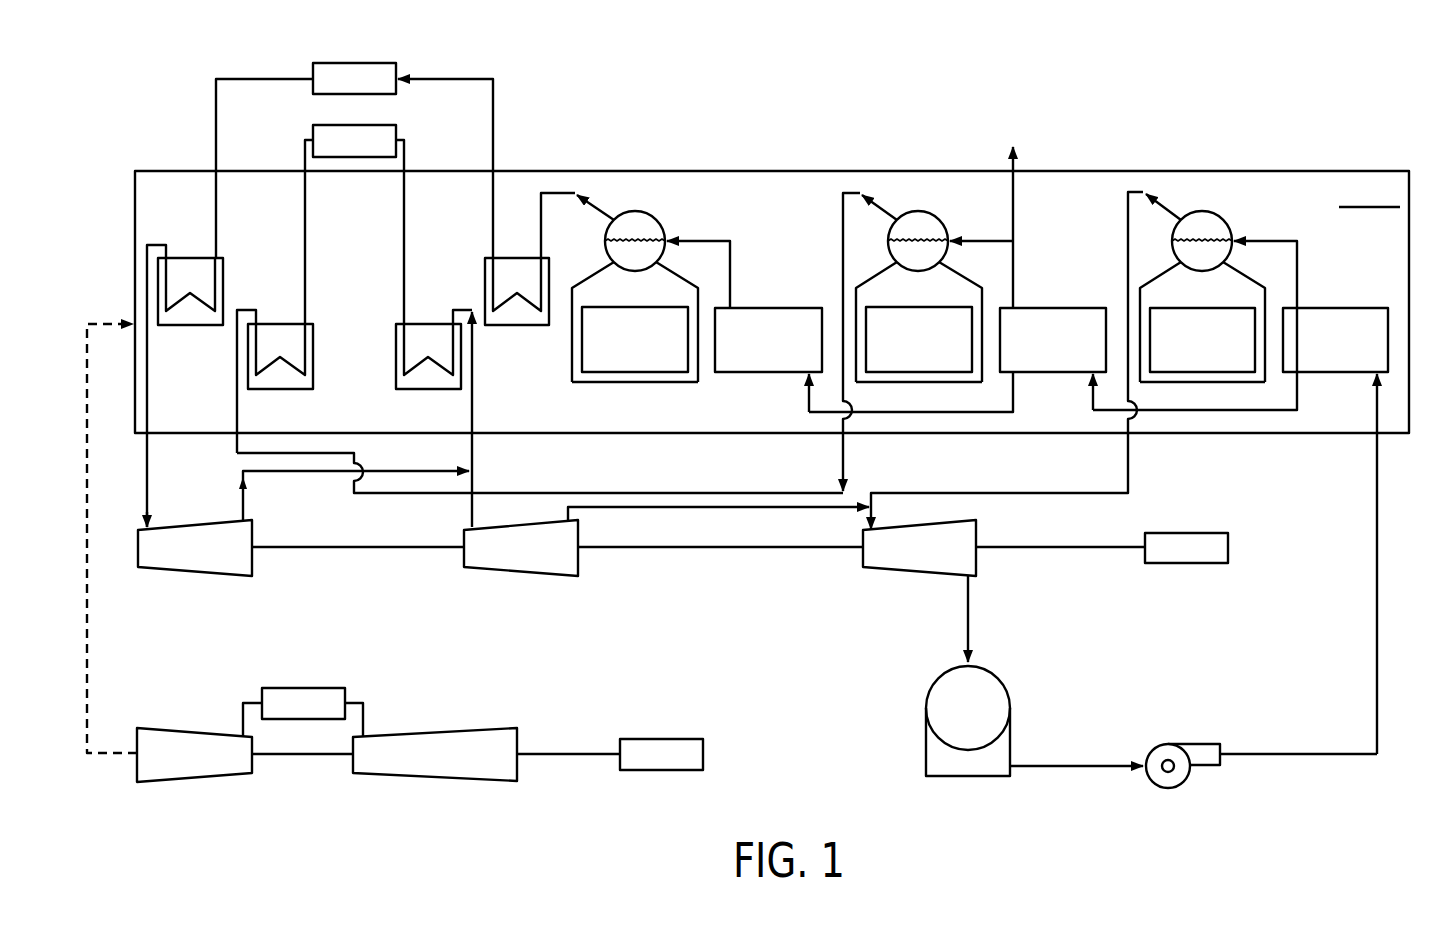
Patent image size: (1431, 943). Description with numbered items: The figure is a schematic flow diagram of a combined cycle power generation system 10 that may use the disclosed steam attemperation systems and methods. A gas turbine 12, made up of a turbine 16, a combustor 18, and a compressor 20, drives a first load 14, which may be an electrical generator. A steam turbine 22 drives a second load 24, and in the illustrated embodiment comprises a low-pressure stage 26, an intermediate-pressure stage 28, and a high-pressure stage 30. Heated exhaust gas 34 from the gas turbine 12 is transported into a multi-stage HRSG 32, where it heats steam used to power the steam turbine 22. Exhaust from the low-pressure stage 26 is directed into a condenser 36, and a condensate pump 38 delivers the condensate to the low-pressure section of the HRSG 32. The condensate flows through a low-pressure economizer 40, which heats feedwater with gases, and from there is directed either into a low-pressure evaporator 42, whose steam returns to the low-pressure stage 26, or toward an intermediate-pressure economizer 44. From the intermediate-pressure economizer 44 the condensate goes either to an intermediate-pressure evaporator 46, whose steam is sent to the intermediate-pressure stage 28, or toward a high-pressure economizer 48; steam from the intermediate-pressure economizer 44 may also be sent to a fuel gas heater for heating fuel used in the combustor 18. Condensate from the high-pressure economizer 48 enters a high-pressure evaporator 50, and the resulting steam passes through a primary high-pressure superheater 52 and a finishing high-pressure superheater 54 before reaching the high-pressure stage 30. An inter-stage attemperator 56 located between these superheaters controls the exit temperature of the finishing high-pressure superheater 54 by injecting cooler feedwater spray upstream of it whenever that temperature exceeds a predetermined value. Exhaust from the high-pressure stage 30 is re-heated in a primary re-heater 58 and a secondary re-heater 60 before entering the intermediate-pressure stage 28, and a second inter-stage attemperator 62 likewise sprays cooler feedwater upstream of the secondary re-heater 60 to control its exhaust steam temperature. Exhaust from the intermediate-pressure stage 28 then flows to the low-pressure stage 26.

The combined cycle power generation system 10 is at (1356, 146).
The gas turbine 12 is at (327, 750).
The first load 14 is at (666, 739).
The turbine 16 is at (193, 731).
The combustor 18 is at (302, 688).
The compressor 20 is at (434, 732).
The steam turbine 22 is at (557, 593).
The second load 24 is at (1188, 533).
The low-pressure stage 26 is at (920, 576).
The intermediate-pressure stage 28 is at (521, 576).
The high-pressure stage 30 is at (197, 567).
The multi-stage HRSG 32 is at (772, 171).
The heated exhaust gas 34 is at (88, 621).
The condenser 36 is at (924, 741).
The condensate pump 38 is at (1182, 785).
The low-pressure economizer 40 is at (1336, 308).
The low-pressure evaporator 42 is at (1242, 272).
The intermediate-pressure economizer 44 is at (1050, 308).
The intermediate-pressure evaporator 46 is at (958, 272).
The high-pressure economizer 48 is at (769, 308).
The high-pressure evaporator 50 is at (675, 272).
The primary high-pressure superheater 52 is at (512, 325).
The finishing high-pressure superheater 54 is at (190, 325).
The inter-stage attemperator 56 is at (397, 94).
The primary re-heater 58 is at (396, 356).
The secondary re-heater 60 is at (313, 358).
The inter-stage attemperator 62 is at (313, 125).